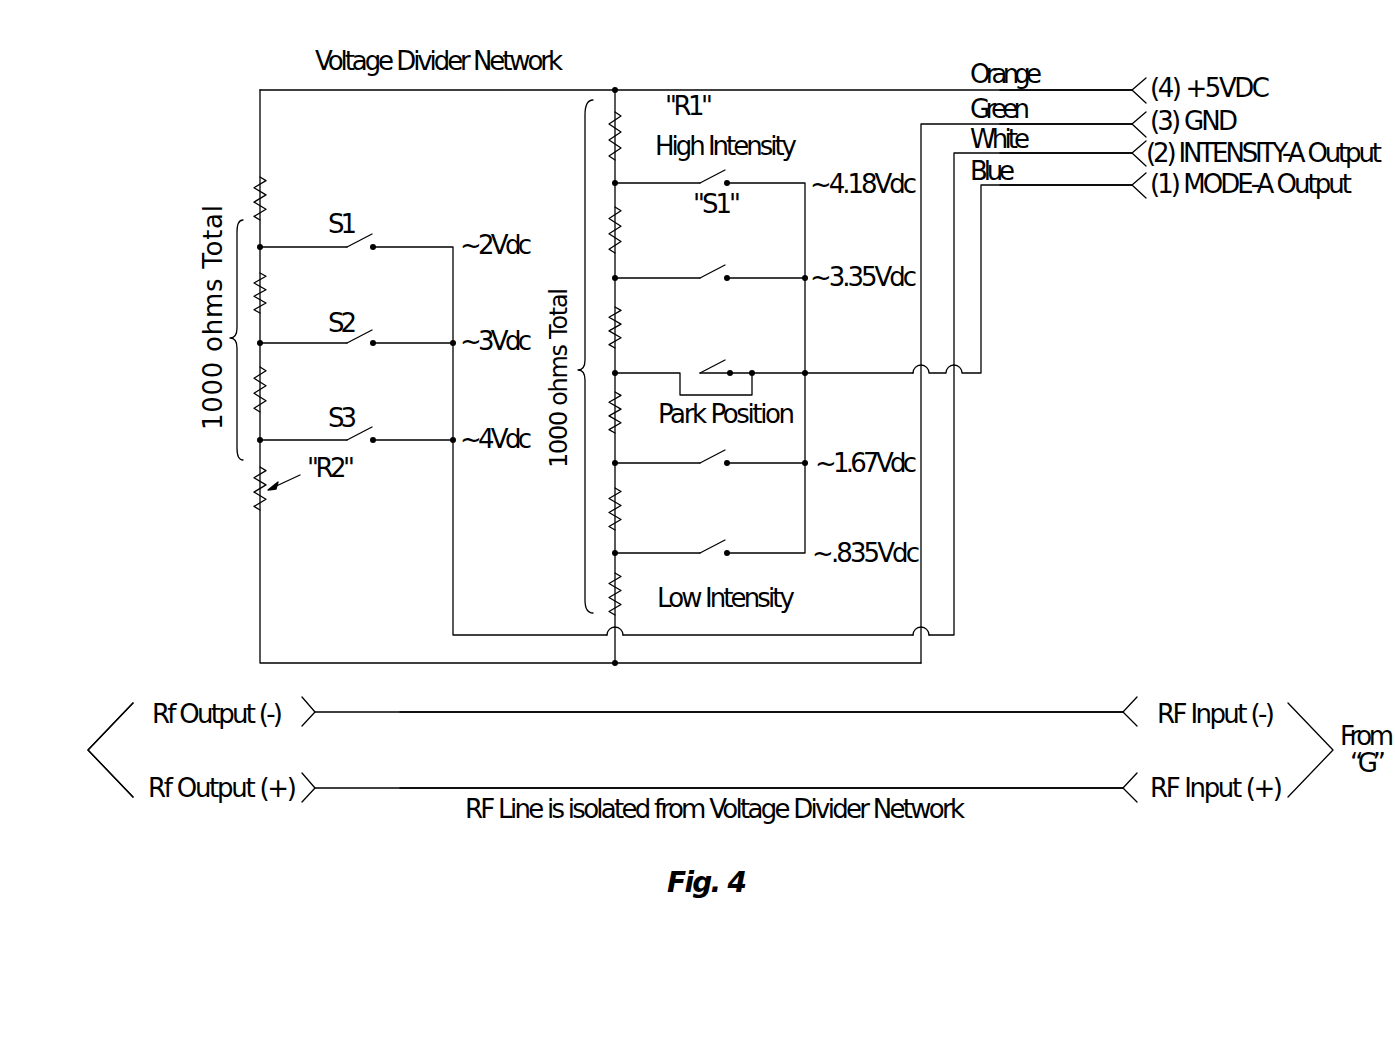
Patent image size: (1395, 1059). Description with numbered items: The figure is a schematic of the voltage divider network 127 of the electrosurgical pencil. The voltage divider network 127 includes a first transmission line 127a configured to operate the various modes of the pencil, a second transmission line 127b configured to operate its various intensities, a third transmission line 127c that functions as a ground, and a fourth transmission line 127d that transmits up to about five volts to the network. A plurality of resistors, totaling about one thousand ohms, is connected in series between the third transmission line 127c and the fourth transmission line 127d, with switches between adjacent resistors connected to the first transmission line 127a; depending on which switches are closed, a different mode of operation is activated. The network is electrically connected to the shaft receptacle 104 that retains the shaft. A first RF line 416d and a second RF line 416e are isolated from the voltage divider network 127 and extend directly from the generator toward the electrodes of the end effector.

The voltage divider network 127 is at (645, 67).
The first transmission line 127a is at (1048, 185).
The second transmission line 127b is at (1048, 153).
The third transmission line 127c is at (1048, 124).
The fourth transmission line 127d is at (1048, 90).
The first RF line 416d is at (887, 788).
The second RF line 416e is at (887, 712).
The shaft receptacle 104 is at (89, 750).